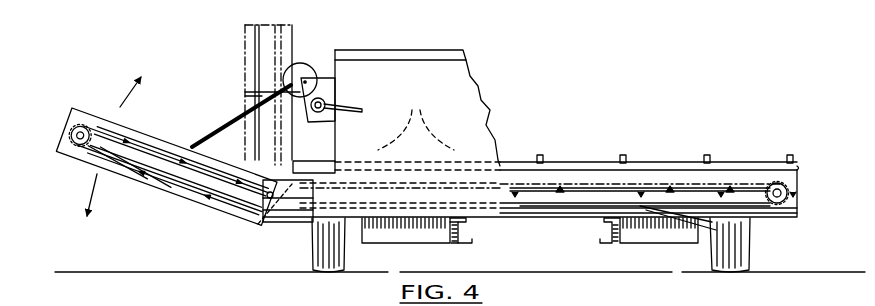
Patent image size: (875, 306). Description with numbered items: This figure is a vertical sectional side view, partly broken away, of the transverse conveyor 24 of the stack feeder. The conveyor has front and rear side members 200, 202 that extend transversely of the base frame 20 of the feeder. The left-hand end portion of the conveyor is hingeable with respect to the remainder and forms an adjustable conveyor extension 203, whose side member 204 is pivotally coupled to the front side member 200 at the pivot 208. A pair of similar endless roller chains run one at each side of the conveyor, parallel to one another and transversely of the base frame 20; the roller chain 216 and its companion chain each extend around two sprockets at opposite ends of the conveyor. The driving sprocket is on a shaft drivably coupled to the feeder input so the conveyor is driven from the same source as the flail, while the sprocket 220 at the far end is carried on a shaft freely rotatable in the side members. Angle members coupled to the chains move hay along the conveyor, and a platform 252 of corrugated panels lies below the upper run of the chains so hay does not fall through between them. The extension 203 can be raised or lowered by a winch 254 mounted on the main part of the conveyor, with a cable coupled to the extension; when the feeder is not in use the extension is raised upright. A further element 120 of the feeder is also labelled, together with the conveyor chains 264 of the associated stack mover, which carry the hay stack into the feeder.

The transverse conveyor 24 is at (554, 180).
The base frame 20 is at (462, 243).
The conveyor chain 120 is at (727, 178).
The front side member 200 is at (558, 193).
The rear side member 202 is at (497, 187).
The adjustable conveyor extension 203 is at (142, 191).
The side member 204 is at (166, 148).
The pivot 208 is at (268, 207).
The roller chain 216 is at (490, 162).
The sprocket 220 is at (796, 193).
The platform 252 is at (665, 184).
The winch 254 is at (312, 72).
The conveyor chains 264 is at (416, 118).